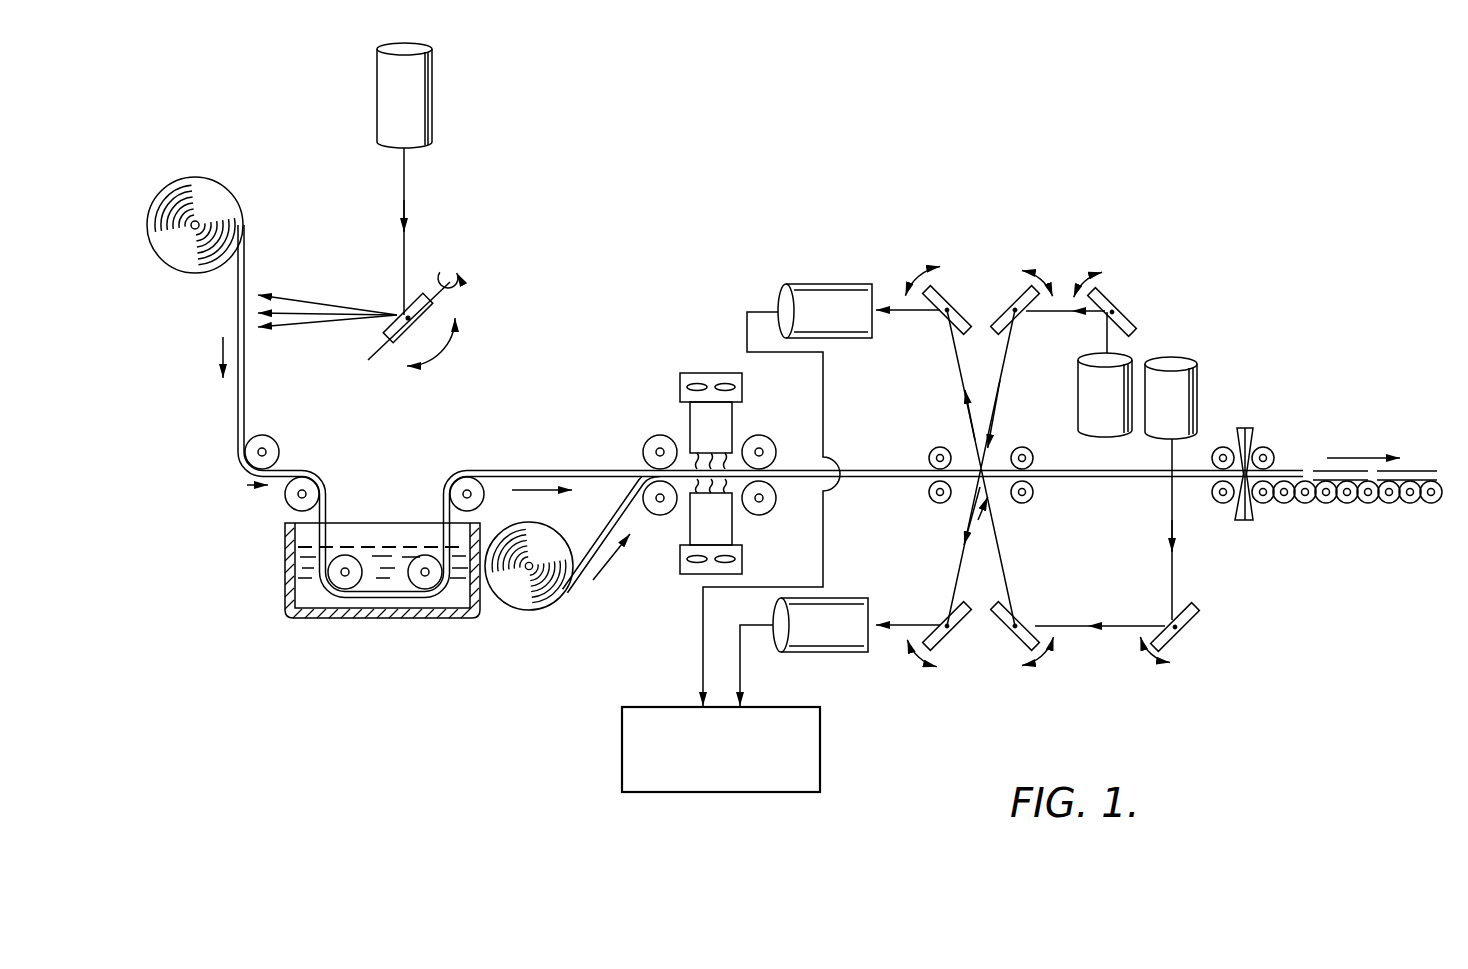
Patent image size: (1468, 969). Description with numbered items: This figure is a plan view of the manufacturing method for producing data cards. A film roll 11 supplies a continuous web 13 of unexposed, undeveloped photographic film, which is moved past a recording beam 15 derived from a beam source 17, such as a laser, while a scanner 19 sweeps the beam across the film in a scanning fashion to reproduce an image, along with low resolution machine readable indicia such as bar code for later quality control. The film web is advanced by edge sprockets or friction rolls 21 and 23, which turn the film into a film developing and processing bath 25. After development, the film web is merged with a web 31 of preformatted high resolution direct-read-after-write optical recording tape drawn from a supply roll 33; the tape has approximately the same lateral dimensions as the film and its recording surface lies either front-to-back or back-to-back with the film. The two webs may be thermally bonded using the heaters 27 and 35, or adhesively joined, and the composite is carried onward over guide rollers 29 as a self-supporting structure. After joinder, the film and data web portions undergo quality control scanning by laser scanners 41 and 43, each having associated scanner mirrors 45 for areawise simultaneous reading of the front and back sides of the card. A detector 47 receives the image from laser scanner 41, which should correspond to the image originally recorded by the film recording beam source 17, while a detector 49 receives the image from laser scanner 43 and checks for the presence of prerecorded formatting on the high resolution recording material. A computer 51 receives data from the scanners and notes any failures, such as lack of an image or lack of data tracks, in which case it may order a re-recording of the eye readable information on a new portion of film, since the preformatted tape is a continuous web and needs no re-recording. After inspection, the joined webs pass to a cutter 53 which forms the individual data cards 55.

The film roll 11 is at (224, 194).
The continuous web 13 is at (245, 270).
The recording beam 15 is at (300, 297).
The beam source 17 is at (432, 110).
The scanner 19 is at (432, 311).
The friction roll 21 is at (272, 437).
The friction roll 23 is at (288, 500).
The film developing and processing bath 25 is at (383, 546).
The heater 27 is at (688, 421).
The guide rollers 29 is at (1185, 475).
The web of optical recording tape 31 is at (627, 520).
The supply roll 33 is at (522, 611).
The heater 35 is at (733, 523).
The laser scanner 41 is at (1078, 398).
The laser scanner 43 is at (1197, 378).
The scanner mirror 45 is at (1017, 302).
The detector 47 is at (817, 282).
The detector 49 is at (832, 650).
The computer 51 is at (813, 733).
The cutter 53 is at (1252, 433).
The data card 55 is at (1313, 471).